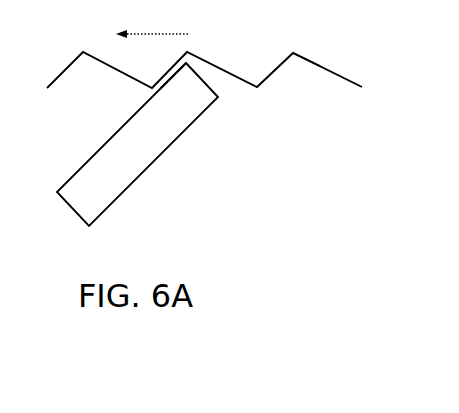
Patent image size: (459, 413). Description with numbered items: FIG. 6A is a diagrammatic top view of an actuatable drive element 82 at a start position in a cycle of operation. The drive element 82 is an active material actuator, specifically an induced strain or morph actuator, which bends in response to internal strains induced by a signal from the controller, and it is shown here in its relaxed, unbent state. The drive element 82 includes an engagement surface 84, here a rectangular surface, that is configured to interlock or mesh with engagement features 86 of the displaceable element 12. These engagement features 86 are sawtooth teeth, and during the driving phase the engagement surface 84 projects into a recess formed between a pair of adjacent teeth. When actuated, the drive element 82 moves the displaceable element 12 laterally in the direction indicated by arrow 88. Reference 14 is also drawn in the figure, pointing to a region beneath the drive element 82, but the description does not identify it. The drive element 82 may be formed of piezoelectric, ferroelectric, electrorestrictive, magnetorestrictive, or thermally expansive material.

The displaceable element 12 is at (340, 50).
The underside region 14 is at (232, 213).
The drive element 82 is at (129, 183).
The engagement surface 84 is at (175, 90).
The engagement features 86 is at (311, 113).
The arrow 88 is at (162, 33).